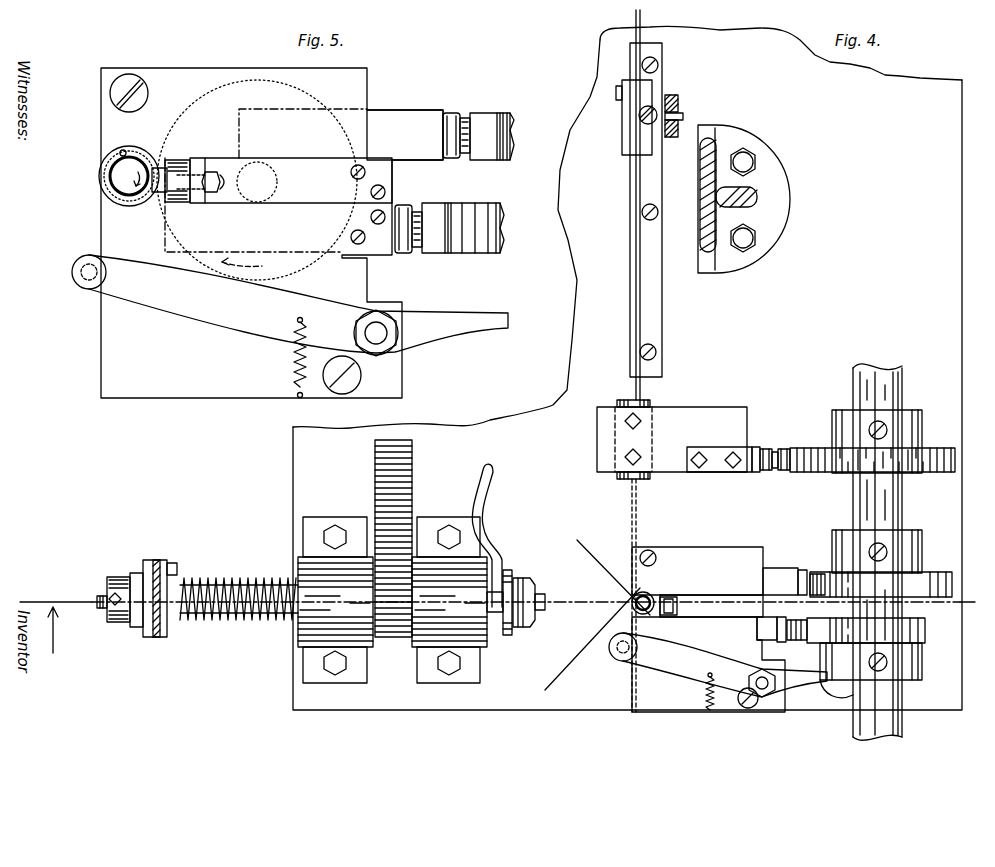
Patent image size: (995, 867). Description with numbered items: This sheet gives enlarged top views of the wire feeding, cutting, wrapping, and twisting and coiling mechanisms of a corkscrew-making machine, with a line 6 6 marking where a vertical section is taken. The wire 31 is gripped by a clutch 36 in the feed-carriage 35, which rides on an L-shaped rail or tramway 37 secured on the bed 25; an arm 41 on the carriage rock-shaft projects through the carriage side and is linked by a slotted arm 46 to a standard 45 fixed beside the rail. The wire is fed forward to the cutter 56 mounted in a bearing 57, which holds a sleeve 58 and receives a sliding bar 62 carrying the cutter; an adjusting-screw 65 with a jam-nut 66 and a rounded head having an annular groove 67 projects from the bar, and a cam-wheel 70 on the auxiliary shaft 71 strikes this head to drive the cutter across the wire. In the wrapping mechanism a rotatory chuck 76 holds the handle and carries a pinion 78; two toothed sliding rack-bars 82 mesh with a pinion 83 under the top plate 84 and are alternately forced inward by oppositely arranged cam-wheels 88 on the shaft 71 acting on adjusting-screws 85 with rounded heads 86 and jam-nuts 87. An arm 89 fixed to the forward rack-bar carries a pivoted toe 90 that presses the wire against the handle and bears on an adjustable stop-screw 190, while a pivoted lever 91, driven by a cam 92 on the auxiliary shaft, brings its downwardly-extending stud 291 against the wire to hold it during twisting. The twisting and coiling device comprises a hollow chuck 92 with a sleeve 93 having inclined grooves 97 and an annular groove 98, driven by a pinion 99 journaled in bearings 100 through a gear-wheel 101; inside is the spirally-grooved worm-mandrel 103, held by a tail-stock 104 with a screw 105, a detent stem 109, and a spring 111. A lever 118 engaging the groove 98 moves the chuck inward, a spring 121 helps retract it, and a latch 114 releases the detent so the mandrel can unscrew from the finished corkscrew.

In FIG. 4, the section line 6 6 is at (505, 616).
In FIG. 4, the bed 25 is at (557, 519).
In FIG. 4, the wire 31 is at (632, 328).
In FIG. 4, the feed-carriage 35 is at (622, 126).
In FIG. 4, the clutch 36 is at (655, 108).
In FIG. 4, the L-shaped rail or tramway 37 is at (630, 184).
In FIG. 4, the arm 41 is at (684, 117).
In FIG. 4, the standard 45 is at (748, 200).
In FIG. 4, the slotted arm 46 is at (680, 102).
In FIG. 4, the cutter 56 is at (697, 474).
In FIG. 4, the bearing 57 is at (672, 439).
In FIG. 4, the sleeve 58 is at (617, 478).
In FIG. 4, the sliding bar 62 is at (752, 474).
In FIG. 4, the adjusting-screw 65 is at (775, 470).
In FIG. 4, the jam-nut 66 is at (767, 449).
In FIG. 4, the annular groove 67 is at (786, 448).
In FIG. 4, the cam-wheel 70 is at (928, 448).
In FIG. 4, the auxiliary shaft 71 is at (877, 548).
In FIG. 5, the rotatory chuck 76 is at (113, 190).
In FIG. 4, the rotatory chuck 76 is at (632, 608).
In FIG. 5, the pinion 78 is at (115, 167).
In FIG. 5, the sliding rack-bars 82 is at (304, 180).
In FIG. 4, the sliding rack-bars 82 is at (780, 565).
In FIG. 5, the pinion 83 is at (257, 180).
In FIG. 5, the top plate 84 is at (272, 233).
In FIG. 4, the top plate 84 is at (708, 629).
In FIG. 5, the adjusting-screws 85 is at (465, 118).
In FIG. 5, the rounded heads 86 is at (488, 113).
In FIG. 4, the rounded heads 86 is at (816, 574).
In FIG. 5, the jam-nuts 87 is at (450, 110).
In FIG. 4, the jam-nuts 87 is at (802, 569).
In FIG. 5, the cam-wheels 88 is at (518, 183).
In FIG. 4, the cam-wheels 88 is at (942, 572).
In FIG. 5, the arm 89 is at (291, 180).
In FIG. 4, the arm 89 is at (711, 606).
In FIG. 5, the pivoted toe 90 is at (167, 203).
In FIG. 4, the pivoted toe 90 is at (667, 617).
In FIG. 5, the pivoted lever 91 is at (290, 326).
In FIG. 4, the pivoted lever 91 is at (696, 680).
In FIG. 4, the hollow chuck 92 is at (238, 580).
In FIG. 4, the sleeve 93 is at (528, 580).
In FIG. 4, the inclined grooves 97 is at (546, 598).
In FIG. 4, the annular groove 98 is at (506, 636).
In FIG. 4, the pinion 99 is at (394, 647).
In FIG. 4, the bearings 100 is at (331, 518).
In FIG. 4, the gear-wheel 101 is at (412, 469).
In FIG. 4, the spirally-grooved worm-mandrel 103 is at (97, 599).
In FIG. 4, the tail-stock 104 is at (136, 628).
In FIG. 4, the screw 105 is at (107, 612).
In FIG. 4, the stem 109 is at (173, 563).
In FIG. 4, the spring 111 is at (156, 638).
In FIG. 4, the latch 114 is at (152, 560).
In FIG. 4, the lever 118 is at (495, 497).
In FIG. 4, the spring 121 is at (224, 622).
In FIG. 5, the adjustable stop-screw 190 is at (214, 195).
In FIG. 5, the downwardly-extending stud 291 is at (86, 276).